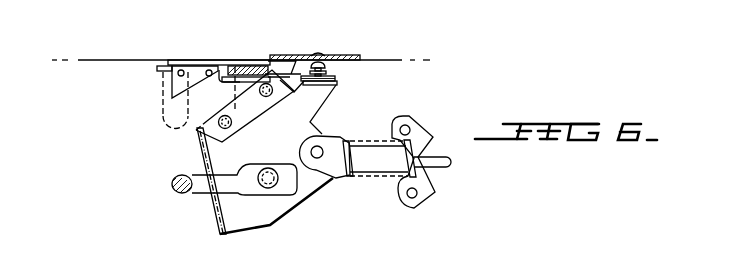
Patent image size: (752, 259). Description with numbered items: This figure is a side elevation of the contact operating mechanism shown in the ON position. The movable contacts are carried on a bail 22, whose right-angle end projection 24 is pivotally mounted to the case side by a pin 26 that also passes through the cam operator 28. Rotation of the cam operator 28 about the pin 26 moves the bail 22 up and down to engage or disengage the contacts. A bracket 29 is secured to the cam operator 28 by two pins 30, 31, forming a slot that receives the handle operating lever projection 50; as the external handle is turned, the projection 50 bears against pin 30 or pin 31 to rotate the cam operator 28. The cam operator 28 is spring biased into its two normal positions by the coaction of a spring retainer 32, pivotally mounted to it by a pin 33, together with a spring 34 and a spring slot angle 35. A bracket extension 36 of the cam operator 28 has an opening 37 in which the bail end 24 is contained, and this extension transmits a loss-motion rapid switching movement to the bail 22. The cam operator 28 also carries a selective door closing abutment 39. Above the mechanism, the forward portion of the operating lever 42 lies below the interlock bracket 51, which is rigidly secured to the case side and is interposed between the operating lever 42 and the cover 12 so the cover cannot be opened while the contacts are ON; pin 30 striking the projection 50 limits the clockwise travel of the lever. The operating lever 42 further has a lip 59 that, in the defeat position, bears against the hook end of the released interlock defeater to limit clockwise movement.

The cover 12 is at (338, 60).
The bail 22 is at (163, 190).
The end projection 24 is at (232, 194).
The pin 26 is at (281, 206).
The cam operator 28 is at (310, 183).
The bracket 29 is at (232, 115).
The pin 30 is at (273, 94).
The pin 31 is at (229, 135).
The spring retainer 32 is at (362, 152).
The pin 33 is at (311, 152).
The spring 34 is at (384, 176).
The spring slot angle 35 is at (414, 206).
The bracket extension 36 is at (198, 160).
The opening 37 is at (212, 206).
The selective door closing abutment 39 is at (338, 78).
The operating lever 42 is at (251, 65).
The handle operating lever projection 50 is at (163, 110).
The interlock bracket 51 is at (209, 62).
The lip 59 is at (272, 72).